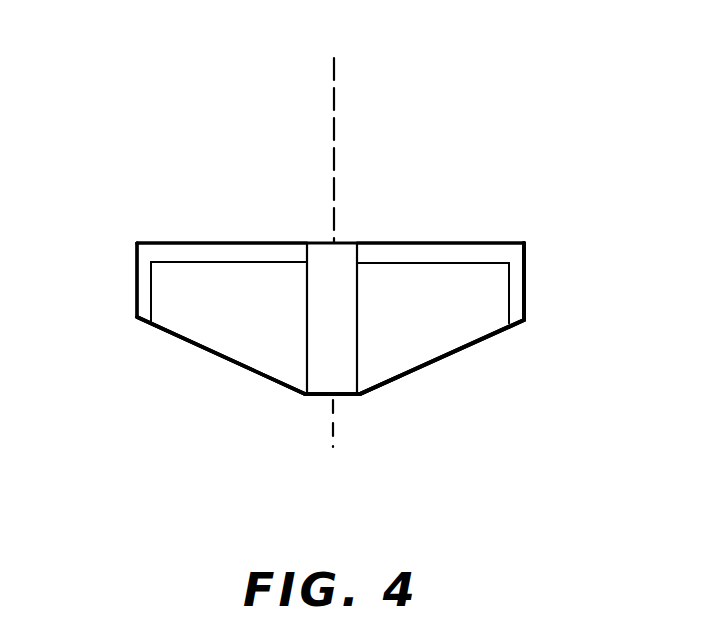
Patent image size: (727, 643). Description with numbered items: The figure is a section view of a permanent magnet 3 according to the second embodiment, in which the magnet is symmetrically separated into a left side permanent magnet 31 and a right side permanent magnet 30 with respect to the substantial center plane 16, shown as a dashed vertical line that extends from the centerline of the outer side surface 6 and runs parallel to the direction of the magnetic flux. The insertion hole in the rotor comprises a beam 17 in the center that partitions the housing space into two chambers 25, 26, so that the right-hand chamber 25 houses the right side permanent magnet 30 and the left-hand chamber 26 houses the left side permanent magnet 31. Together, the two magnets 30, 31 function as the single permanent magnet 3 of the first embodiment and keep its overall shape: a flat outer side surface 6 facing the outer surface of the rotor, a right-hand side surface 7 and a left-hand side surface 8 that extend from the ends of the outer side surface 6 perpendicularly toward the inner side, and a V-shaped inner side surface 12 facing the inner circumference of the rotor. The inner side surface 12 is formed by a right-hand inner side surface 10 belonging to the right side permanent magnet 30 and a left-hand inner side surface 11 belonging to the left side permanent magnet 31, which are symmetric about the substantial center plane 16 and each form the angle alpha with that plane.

The permanent magnet 3 is at (428, 98).
The substantial center plane 16 is at (332, 69).
The beam 17 is at (340, 250).
The right side permanent magnet 30 is at (383, 268).
The left side permanent magnet 31 is at (245, 278).
The outer side surface 6 is at (290, 260).
The right-hand chamber 25 is at (472, 253).
The left-hand chamber 26 is at (183, 250).
The left-hand side surface 8 is at (151, 289).
The right-hand side surface 7 is at (509, 289).
The left-hand inner side surface 11 is at (228, 358).
The right-hand inner side surface 10 is at (440, 357).
The inner side surface 12 is at (388, 383).